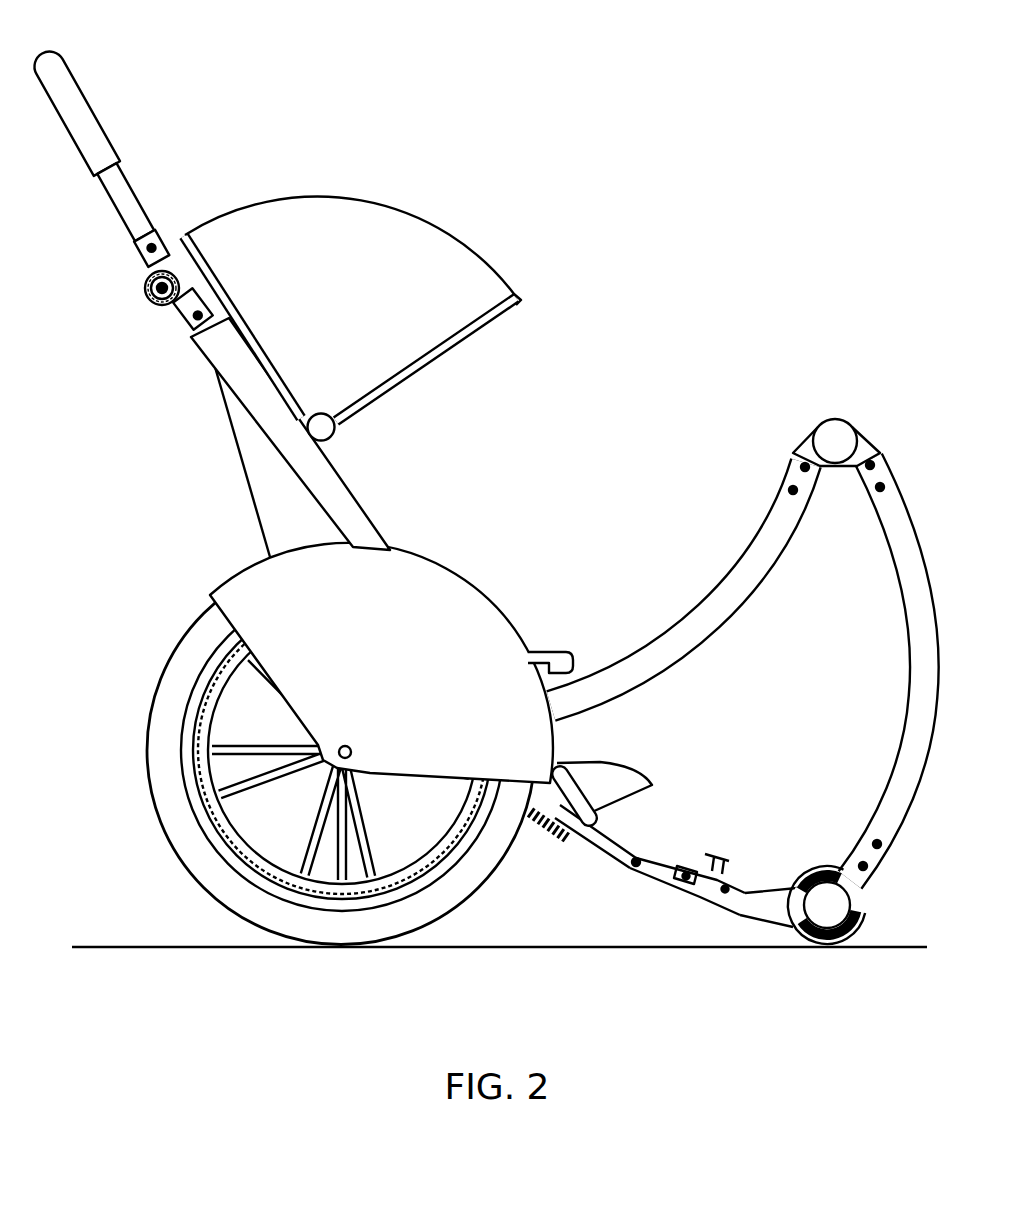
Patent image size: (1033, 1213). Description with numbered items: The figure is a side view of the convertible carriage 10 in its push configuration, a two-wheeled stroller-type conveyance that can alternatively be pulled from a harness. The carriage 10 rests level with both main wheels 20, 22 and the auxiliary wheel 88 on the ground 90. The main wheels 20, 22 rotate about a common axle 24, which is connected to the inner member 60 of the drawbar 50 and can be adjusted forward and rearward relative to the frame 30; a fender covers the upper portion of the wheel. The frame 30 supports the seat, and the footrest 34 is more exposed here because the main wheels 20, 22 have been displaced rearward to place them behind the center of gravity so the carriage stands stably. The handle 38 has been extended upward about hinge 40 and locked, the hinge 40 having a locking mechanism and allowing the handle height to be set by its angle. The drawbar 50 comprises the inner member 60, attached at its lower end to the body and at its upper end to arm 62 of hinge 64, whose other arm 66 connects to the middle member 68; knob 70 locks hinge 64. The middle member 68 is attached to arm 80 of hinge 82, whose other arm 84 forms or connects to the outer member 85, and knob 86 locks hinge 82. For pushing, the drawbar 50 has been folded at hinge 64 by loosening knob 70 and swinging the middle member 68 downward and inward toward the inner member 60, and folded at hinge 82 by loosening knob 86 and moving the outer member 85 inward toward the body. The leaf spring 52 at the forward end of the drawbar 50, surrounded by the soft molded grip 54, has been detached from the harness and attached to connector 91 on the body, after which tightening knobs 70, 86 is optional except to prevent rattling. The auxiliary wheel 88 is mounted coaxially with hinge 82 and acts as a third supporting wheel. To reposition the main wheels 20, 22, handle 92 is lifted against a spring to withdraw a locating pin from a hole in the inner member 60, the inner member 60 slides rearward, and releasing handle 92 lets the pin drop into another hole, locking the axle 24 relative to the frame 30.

The carriage 10 is at (480, 509).
The main wheel 20 is at (310, 751).
The main wheel 22 is at (305, 850).
The axle 24 is at (344, 746).
The frame 30 is at (372, 550).
The footrest 34 is at (653, 776).
The handle 38 is at (68, 75).
The hinge 40 is at (147, 297).
The drawbar 50 is at (737, 597).
The leaf spring 52 is at (665, 875).
The molded grip 54 is at (620, 858).
The inner member 60 is at (688, 612).
The arm 62 is at (805, 445).
The hinge 64 is at (826, 421).
The arm 66 is at (866, 430).
The middle member 68 is at (895, 757).
The knob 70 is at (837, 464).
The arm 80 is at (843, 842).
The hinge 82 is at (792, 882).
The arm 84 is at (775, 882).
The outer member 85 is at (742, 908).
The knob 86 is at (807, 918).
The auxiliary wheel 88 is at (860, 932).
The ground 90 is at (142, 945).
The connector 91 is at (540, 834).
The handle 92 is at (558, 652).